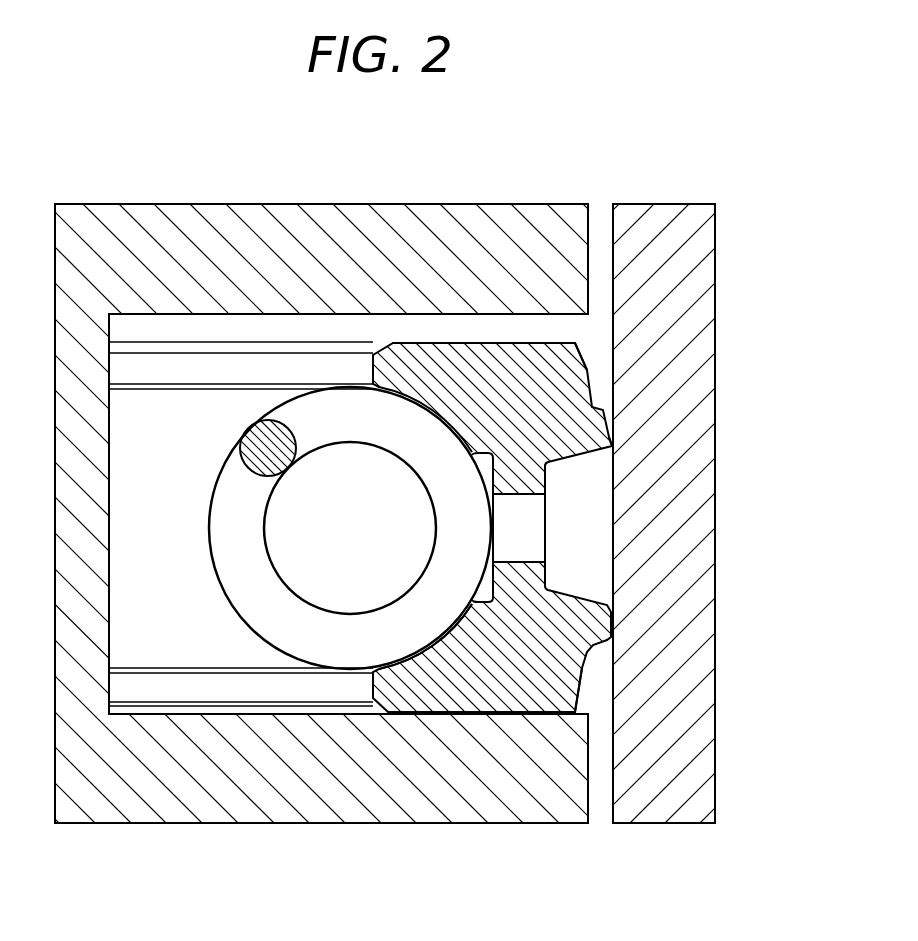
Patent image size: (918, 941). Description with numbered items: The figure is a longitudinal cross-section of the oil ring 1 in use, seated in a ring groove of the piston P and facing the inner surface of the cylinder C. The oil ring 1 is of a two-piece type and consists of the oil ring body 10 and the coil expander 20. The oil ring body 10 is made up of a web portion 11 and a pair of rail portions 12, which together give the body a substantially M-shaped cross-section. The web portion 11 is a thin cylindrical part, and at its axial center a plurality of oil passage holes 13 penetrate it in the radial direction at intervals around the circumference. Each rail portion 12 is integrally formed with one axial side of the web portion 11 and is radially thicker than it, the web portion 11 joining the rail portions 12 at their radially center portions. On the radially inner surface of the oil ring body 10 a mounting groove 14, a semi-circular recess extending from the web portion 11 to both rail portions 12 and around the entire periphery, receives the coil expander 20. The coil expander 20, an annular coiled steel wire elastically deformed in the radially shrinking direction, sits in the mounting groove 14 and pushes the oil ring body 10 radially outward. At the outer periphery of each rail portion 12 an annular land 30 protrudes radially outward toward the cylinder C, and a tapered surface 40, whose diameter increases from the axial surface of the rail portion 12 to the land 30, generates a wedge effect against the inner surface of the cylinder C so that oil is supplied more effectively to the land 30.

The oil ring 1 is at (459, 511).
The oil ring body 10 is at (493, 344).
The web portion 11 is at (489, 578).
The rail portions 12 is at (438, 344).
The oil passage holes 13 is at (515, 528).
The mounting groove 14 is at (405, 670).
The coil expander 20 is at (313, 400).
The land 30 is at (612, 443).
The tapered surface 40 is at (583, 370).
The cylinder C is at (663, 205).
The piston P is at (238, 822).